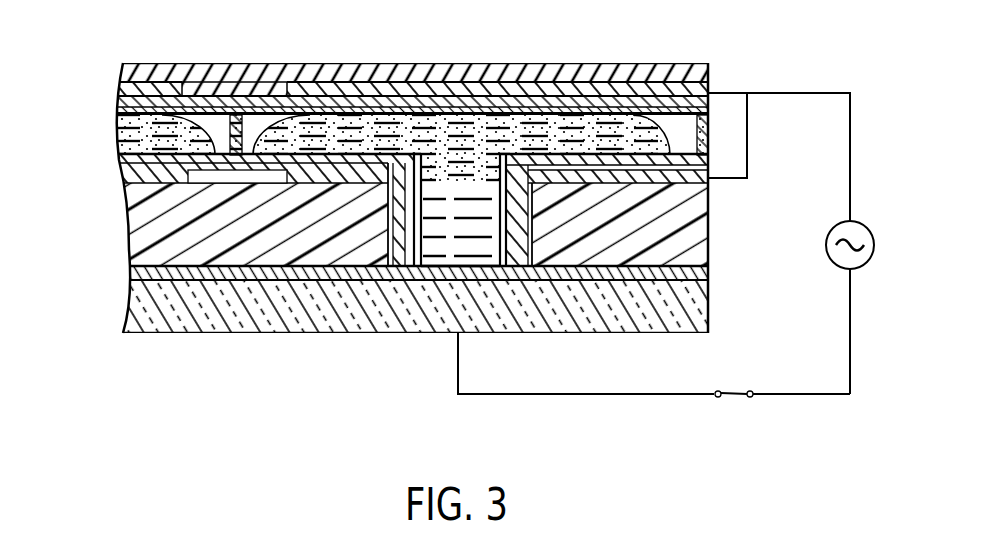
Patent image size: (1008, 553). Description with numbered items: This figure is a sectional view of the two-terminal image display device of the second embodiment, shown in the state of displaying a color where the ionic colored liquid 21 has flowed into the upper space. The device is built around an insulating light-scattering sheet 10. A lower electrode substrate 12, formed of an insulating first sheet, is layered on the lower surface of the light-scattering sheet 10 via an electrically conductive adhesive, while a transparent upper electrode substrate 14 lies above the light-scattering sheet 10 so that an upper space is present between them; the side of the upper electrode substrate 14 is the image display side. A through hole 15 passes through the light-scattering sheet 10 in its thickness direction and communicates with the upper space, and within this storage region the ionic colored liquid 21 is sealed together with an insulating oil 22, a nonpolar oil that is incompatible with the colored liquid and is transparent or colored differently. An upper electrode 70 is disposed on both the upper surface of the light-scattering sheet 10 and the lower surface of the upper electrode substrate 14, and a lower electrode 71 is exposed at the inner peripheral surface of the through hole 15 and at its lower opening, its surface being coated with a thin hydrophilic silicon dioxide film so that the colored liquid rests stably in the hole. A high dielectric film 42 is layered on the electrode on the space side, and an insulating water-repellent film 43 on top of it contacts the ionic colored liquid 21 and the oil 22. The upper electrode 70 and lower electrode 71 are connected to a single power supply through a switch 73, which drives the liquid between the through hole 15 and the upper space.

The light-scattering sheet 10 is at (127, 223).
The lower electrode substrate 12 is at (171, 326).
The upper electrode substrate 14 is at (690, 65).
The through hole 15 is at (338, 283).
The ionic colored liquid 21 is at (617, 180).
The insulating oil 22 is at (442, 250).
The high dielectric film 42 is at (472, 103).
The insulating water-repellent film 43 is at (397, 96).
The upper electrode 70 is at (557, 93).
The lower electrode 71 is at (430, 235).
The switch 73 is at (733, 402).